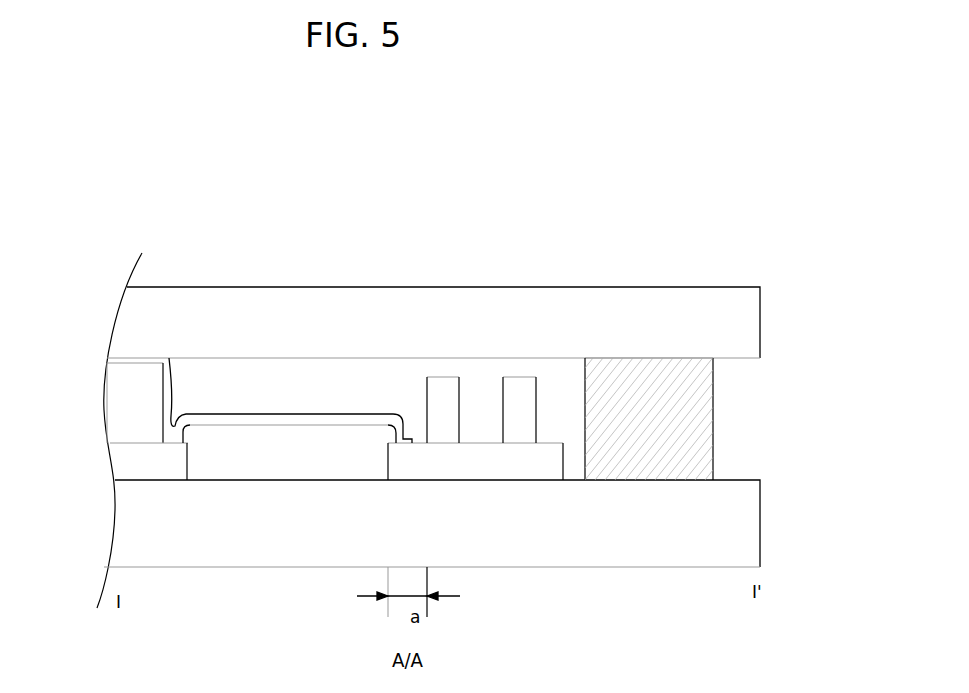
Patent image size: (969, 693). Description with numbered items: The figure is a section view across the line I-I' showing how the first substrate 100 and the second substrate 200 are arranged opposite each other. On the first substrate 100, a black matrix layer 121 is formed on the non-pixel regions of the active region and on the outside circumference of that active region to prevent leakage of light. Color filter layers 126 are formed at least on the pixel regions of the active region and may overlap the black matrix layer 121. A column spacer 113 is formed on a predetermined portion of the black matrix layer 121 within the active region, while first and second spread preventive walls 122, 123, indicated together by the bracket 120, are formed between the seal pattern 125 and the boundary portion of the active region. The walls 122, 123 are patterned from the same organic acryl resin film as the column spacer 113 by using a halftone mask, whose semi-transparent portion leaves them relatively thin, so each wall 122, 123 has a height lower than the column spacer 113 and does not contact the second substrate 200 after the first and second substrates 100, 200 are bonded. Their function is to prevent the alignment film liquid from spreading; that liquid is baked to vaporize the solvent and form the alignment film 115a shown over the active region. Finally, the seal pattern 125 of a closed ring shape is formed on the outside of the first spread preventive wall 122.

The first substrate 100 is at (639, 547).
The second substrate 200 is at (632, 310).
The column spacer 113 is at (117, 392).
The alignment film 115a is at (242, 420).
The spacer structure 120 is at (483, 294).
The black matrix layer 121 is at (125, 467).
The first spread preventive wall 122 is at (522, 387).
The second spread preventive wall 123 is at (446, 388).
The seal pattern 125 is at (698, 415).
The color filter layer 126 is at (279, 458).